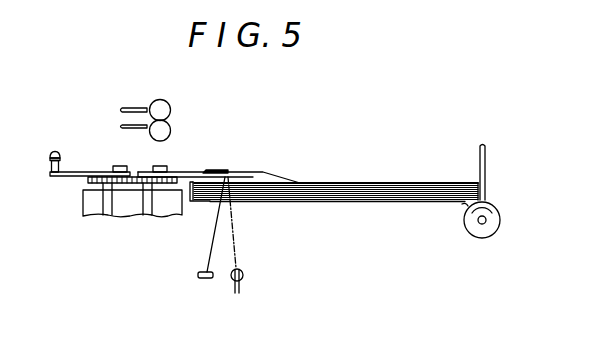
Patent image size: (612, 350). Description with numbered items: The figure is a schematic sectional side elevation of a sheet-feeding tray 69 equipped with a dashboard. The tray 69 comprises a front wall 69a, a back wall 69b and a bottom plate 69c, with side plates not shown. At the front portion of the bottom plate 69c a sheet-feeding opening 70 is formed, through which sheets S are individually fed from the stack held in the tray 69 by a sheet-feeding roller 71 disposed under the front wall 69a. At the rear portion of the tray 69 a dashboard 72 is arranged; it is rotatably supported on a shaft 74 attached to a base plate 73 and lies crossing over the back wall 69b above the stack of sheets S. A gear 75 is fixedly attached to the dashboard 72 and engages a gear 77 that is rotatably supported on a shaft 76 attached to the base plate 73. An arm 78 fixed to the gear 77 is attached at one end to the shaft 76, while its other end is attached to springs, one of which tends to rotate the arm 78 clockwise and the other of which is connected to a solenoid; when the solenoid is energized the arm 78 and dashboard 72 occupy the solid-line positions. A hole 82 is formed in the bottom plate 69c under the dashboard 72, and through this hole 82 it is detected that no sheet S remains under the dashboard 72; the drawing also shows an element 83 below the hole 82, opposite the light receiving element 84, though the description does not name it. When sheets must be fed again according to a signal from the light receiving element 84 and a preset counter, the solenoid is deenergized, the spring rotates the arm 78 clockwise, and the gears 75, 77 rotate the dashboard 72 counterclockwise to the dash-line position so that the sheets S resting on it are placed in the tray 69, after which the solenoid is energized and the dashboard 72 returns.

The sheet-feeding tray 69 is at (363, 204).
The front wall 69a is at (485, 163).
The back wall 69b is at (188, 203).
The bottom plate 69c is at (298, 203).
The sheet-feeding opening 70 is at (466, 204).
The sheet-feeding roller 71 is at (500, 230).
The dashboard 72 is at (192, 172).
The base plate 73 is at (83, 202).
The shaft 74 is at (162, 166).
The gear 75 is at (147, 200).
The shaft 76 is at (119, 166).
The gear 77 is at (104, 200).
The arm 78 is at (74, 172).
The hole 82 is at (229, 180).
The pin 83 is at (243, 277).
The light receiving element 84 is at (203, 279).
The sheets S is at (355, 183).